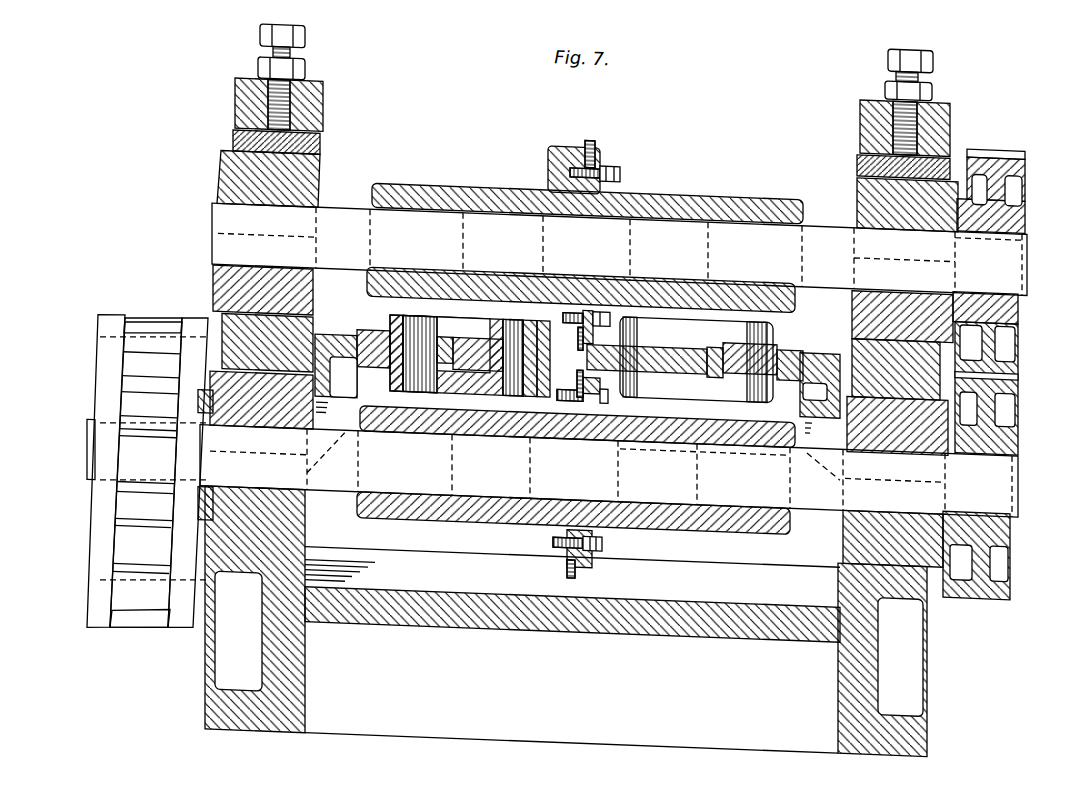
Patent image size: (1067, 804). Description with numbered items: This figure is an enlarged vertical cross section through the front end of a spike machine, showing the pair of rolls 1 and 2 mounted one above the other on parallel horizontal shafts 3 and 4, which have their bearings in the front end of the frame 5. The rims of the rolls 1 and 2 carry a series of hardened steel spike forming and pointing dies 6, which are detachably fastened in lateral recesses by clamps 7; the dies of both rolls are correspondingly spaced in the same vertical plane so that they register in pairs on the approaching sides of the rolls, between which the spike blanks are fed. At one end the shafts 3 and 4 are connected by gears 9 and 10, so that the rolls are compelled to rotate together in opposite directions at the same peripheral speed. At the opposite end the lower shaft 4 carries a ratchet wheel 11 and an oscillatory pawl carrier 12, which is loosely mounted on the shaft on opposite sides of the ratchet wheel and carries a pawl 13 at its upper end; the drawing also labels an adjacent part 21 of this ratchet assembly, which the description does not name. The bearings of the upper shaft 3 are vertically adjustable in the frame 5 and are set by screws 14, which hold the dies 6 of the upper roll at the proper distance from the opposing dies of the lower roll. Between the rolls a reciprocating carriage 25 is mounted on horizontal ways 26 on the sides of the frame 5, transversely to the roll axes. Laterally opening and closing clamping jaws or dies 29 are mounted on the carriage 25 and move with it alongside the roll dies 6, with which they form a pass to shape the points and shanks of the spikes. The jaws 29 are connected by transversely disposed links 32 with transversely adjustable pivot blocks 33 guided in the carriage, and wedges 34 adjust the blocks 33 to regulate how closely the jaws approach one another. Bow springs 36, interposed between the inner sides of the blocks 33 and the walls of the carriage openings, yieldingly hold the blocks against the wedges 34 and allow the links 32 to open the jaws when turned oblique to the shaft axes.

The upper roll 1 is at (548, 146).
The lower roll 2 is at (545, 513).
The upper shaft 3 is at (619, 249).
The lower shaft 4 is at (609, 471).
The frame 5 is at (560, 622).
The spike forming and pointing dies 6 is at (590, 118).
The clamps 7 is at (612, 143).
The gear 9 is at (1026, 153).
The gear 10 is at (1016, 372).
The ratchet wheel 11 is at (133, 446).
The oscillatory pawl carrier 12 is at (96, 519).
The pawl 13 is at (148, 312).
The adjusting screws 14 is at (260, 26).
The wheel disc 21 is at (144, 623).
The reciprocating carriage 25 is at (333, 322).
The horizontal ways 26 is at (330, 398).
The clamping jaws 29 is at (620, 295).
The links 32 is at (479, 312).
The pivot blocks 33 is at (390, 352).
The wedges 34 is at (370, 316).
The bow springs 36 is at (446, 320).